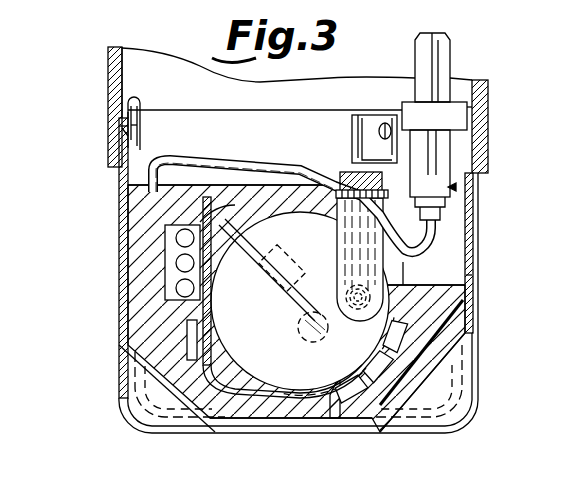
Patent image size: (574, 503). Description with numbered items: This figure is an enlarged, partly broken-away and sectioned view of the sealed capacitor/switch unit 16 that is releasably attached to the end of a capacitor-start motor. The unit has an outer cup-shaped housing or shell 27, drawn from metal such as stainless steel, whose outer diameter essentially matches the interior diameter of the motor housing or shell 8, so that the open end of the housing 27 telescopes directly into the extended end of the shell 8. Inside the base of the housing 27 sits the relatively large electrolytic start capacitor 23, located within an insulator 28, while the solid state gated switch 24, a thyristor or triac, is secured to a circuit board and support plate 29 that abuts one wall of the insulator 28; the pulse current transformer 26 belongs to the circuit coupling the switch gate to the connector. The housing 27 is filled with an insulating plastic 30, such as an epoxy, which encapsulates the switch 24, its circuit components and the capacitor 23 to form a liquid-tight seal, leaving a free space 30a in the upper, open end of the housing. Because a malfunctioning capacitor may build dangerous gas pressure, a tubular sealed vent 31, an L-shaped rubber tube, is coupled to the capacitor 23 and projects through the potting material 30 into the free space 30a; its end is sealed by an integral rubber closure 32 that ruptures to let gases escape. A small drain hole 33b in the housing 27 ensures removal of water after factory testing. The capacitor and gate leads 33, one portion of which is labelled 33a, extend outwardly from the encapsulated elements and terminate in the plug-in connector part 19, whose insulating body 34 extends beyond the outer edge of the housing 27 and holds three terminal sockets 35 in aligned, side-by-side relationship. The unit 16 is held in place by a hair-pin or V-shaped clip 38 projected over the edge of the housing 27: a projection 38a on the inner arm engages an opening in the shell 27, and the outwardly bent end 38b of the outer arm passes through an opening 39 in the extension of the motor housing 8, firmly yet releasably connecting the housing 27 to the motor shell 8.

The motor housing or shell 8 is at (108, 50).
The capacitor/switch unit 16 is at (472, 258).
The capacitor/switch connector part 19 is at (455, 187).
The start capacitor 23 is at (292, 371).
The solid state gated switch 24 is at (187, 340).
The pulse current transformer 26 is at (395, 322).
The housing or shell 27 is at (121, 402).
The insulator 28 is at (214, 310).
The circuit board and support plate 29 is at (212, 286).
The insulating plastic 30 is at (452, 318).
The free space 30a is at (455, 232).
The tubular sealed vent 31 is at (340, 232).
The rubber closure 32 is at (347, 180).
The capacitor and gate leads 33 is at (281, 148).
The conduit upper portion 33a is at (232, 142).
The drain hole 33b is at (472, 280).
The insulating body 34 is at (442, 152).
The terminal sockets 35 is at (450, 60).
The clip 38 is at (136, 100).
The projection 38a is at (141, 132).
The outwardly bent end 38b is at (125, 132).
The opening 39 is at (121, 126).